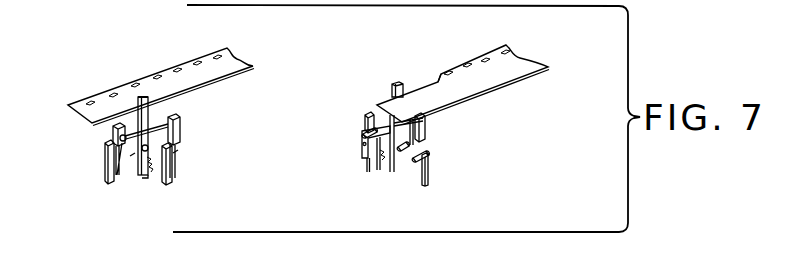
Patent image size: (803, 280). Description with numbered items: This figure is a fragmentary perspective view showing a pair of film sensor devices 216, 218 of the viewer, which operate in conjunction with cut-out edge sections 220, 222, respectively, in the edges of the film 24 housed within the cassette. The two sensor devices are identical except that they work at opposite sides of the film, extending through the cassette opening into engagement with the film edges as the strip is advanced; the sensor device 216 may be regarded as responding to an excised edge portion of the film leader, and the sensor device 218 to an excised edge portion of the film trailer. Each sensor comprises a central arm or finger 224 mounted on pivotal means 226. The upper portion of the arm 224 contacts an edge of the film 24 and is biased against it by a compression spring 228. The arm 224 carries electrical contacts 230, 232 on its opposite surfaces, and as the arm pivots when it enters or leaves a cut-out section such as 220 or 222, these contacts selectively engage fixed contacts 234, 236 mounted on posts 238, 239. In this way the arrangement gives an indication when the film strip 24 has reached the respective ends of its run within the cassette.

The film 24 is at (180, 63).
The film sensor device 216 is at (100, 150).
The film sensor device 218 is at (442, 136).
The cut-out edge section 220 is at (155, 100).
The cut-out edge section 222 is at (420, 87).
The central arm 224 is at (145, 97).
The pivotal means 226 is at (173, 136).
The compression spring 228 is at (153, 167).
The electrical contact 230 is at (143, 150).
The electrical contact 232 is at (135, 153).
The fixed contact 234 is at (167, 163).
The fixed contact 236 is at (110, 141).
The post 238 is at (173, 154).
The post 239 is at (113, 130).